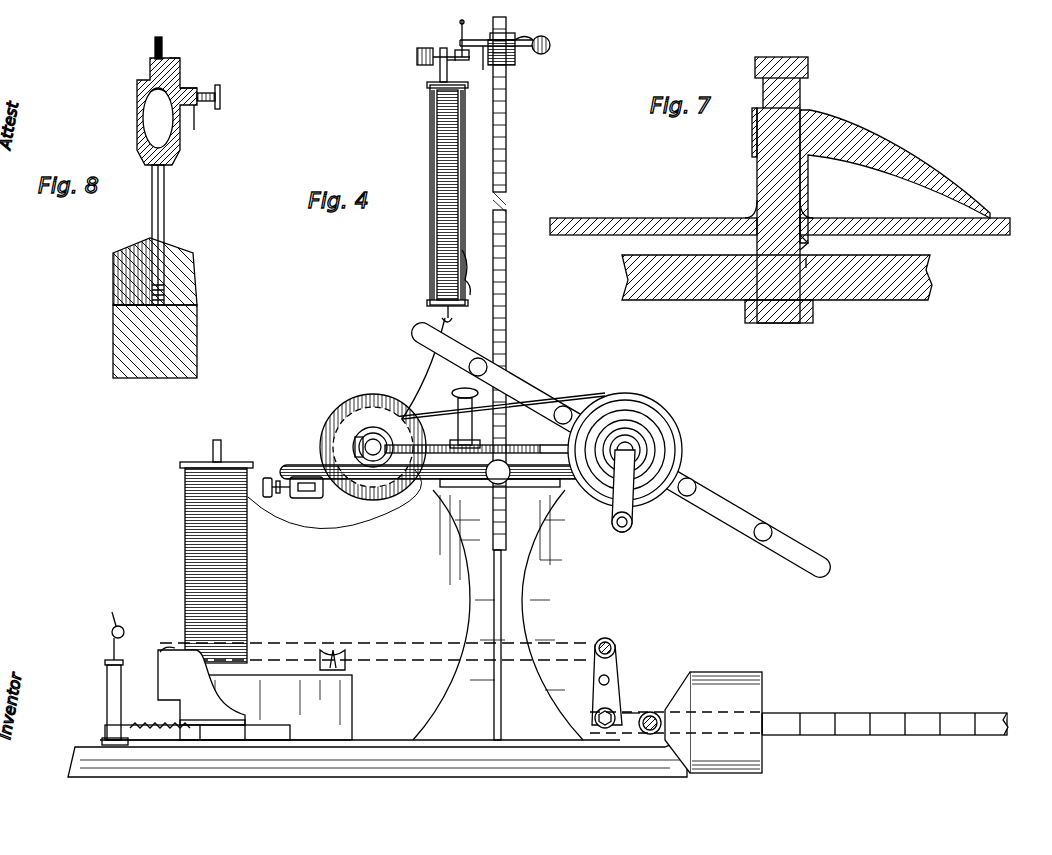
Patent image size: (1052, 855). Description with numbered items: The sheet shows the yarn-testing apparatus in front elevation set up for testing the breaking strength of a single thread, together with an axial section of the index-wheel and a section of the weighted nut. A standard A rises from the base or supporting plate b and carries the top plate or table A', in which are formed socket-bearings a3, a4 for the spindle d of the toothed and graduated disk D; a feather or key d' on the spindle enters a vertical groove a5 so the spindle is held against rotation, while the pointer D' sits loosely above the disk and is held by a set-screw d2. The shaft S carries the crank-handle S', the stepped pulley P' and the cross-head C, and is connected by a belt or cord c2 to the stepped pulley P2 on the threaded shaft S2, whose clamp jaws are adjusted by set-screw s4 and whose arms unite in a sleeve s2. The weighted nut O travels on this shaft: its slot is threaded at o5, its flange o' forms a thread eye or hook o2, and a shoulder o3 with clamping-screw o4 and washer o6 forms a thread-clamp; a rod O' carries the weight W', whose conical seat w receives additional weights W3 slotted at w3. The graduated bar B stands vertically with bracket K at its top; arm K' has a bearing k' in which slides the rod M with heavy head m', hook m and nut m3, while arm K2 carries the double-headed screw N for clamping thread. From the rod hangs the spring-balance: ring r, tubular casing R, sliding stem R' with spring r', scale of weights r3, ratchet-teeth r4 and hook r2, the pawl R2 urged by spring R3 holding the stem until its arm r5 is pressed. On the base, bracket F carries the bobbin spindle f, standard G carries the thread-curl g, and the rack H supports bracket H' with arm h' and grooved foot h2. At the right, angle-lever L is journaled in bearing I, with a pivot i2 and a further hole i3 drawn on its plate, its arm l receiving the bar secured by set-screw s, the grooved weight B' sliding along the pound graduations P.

In FIG. 8, the weighted nut O is at (155, 111).
In FIG. 8, the flange o' is at (181, 51).
In FIG. 8, the thread eye or hook o2 is at (155, 46).
In FIG. 8, the shoulder o3 is at (190, 86).
In FIG. 8, the clamping-screw o4 is at (218, 97).
In FIG. 8, the screw-threaded upper end of slot o5 is at (158, 98).
In FIG. 8, the washer o6 is at (202, 123).
In FIG. 8, the rod O' is at (169, 235).
In FIG. 8, the additional weight W3 is at (169, 271).
In FIG. 8, the vertical slot w3 is at (118, 262).
In FIG. 8, the seat w is at (112, 308).
In FIG. 8, the weight W' is at (168, 341).
In FIG. 7, the set-screw d2 is at (795, 82).
In FIG. 7, the spindle d is at (779, 215).
In FIG. 7, the pointer D' is at (895, 176).
In FIG. 4, the pointer D' is at (563, 434).
In FIG. 7, the graduated disk D is at (792, 213).
In FIG. 4, the graduated disk D is at (462, 439).
In FIG. 7, the feather or key d' is at (825, 245).
In FIG. 7, the top plate or table A' is at (765, 289).
In FIG. 4, the top plate or table A' is at (445, 498).
In FIG. 7, the vertical groove a5 is at (808, 262).
In FIG. 4, the graduated bar B is at (750, 378).
In FIG. 4, the bracket K is at (508, 57).
In FIG. 4, the arm K' is at (496, 29).
In FIG. 4, the arm K2 is at (529, 25).
In FIG. 4, the double-headed screw N is at (550, 40).
In FIG. 4, the heavy head m' is at (455, 35).
In FIG. 4, the bearing k' is at (448, 43).
In FIG. 4, the nut m3 is at (432, 56).
In FIG. 4, the rod M is at (440, 66).
In FIG. 4, the hook m is at (482, 67).
In FIG. 4, the ring r is at (453, 69).
In FIG. 4, the tubular casing R is at (453, 194).
In FIG. 4, the tubular stem R' is at (416, 195).
In FIG. 4, the spring r' is at (421, 195).
In FIG. 4, the ratchet-teeth r4 is at (462, 130).
In FIG. 4, the scale of weights r3 is at (460, 212).
In FIG. 4, the spring R3 is at (475, 256).
In FIG. 4, the arm of pawl r5 is at (477, 276).
In FIG. 4, the pawl R2 is at (452, 305).
In FIG. 4, the hook r2 is at (446, 322).
In FIG. 4, the cross-head C is at (621, 450).
In FIG. 4, the belt or cord c2 is at (495, 400).
In FIG. 4, the stepped cord or belt pulley P2 is at (337, 450).
In FIG. 4, the shaft S2 is at (366, 440).
In FIG. 4, the set-screw s4 is at (355, 447).
In FIG. 4, the sleeve s2 is at (293, 478).
In FIG. 4, the socket-bearing a3 is at (503, 422).
In FIG. 4, the socket-bearing a4 is at (455, 490).
In FIG. 4, the standard A is at (498, 615).
In FIG. 4, the stepped cord or belt pulley P' is at (625, 438).
In FIG. 4, the shaft S is at (654, 449).
In FIG. 4, the crank-handle S' is at (637, 492).
In FIG. 4, the vertical spindle f is at (216, 542).
In FIG. 4, the bracket F is at (276, 695).
In FIG. 4, the bracket H' is at (201, 687).
In FIG. 4, the arm h' is at (155, 655).
In FIG. 4, the rack or toothed plate H is at (197, 721).
In FIG. 4, the foot h2 is at (215, 742).
In FIG. 4, the standard G is at (107, 688).
In FIG. 4, the thread-curl g is at (124, 636).
In FIG. 4, the base or supporting plate b is at (377, 758).
In FIG. 4, the angle-lever L is at (618, 685).
In FIG. 4, the pivot i2 is at (595, 642).
In FIG. 4, the hole i3 is at (617, 667).
In FIG. 4, the bearing I is at (595, 718).
In FIG. 4, the arm l is at (645, 733).
In FIG. 4, the set-screw s is at (652, 713).
In FIG. 4, the grooved weight B' is at (676, 709).
In FIG. 4, the weight-graduations P is at (777, 712).